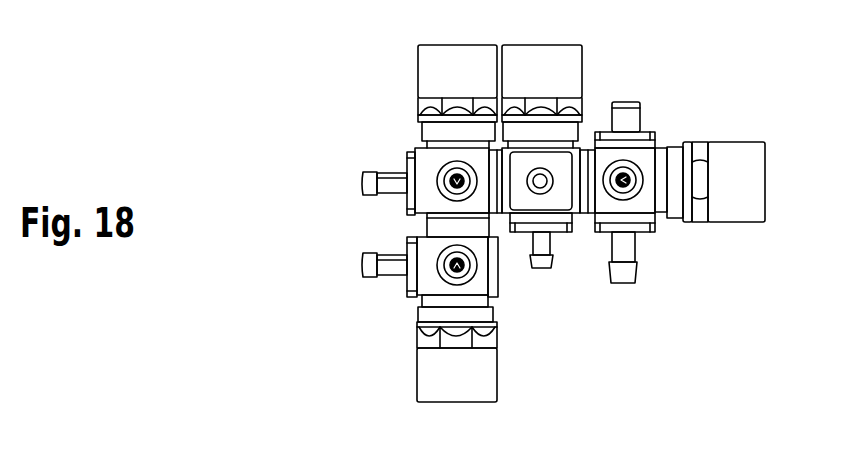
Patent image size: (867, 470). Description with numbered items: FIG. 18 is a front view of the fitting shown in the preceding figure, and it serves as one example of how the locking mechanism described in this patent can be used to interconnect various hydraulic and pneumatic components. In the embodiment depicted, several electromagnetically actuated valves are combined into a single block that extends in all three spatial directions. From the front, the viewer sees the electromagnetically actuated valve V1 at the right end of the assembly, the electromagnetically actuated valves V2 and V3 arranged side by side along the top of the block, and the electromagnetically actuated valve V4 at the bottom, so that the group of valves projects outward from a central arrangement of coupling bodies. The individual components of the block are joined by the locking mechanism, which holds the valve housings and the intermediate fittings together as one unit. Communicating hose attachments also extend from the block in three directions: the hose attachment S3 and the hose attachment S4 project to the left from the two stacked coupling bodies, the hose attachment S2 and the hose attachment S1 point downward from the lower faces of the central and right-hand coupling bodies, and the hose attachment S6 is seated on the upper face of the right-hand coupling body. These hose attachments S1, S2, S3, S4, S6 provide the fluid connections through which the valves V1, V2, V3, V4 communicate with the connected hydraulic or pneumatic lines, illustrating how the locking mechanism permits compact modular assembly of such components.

The electromagnetically actuated valve V1 is at (723, 203).
The electromagnetically actuated valve V2 is at (558, 82).
The electromagnetically actuated valve V3 is at (442, 72).
The electromagnetically actuated valve V4 is at (438, 378).
The hose attachment S1 is at (642, 227).
The hose attachment S2 is at (553, 227).
The hose attachment S3 is at (412, 169).
The hose attachment S4 is at (410, 281).
The hose attachment S6 is at (643, 132).